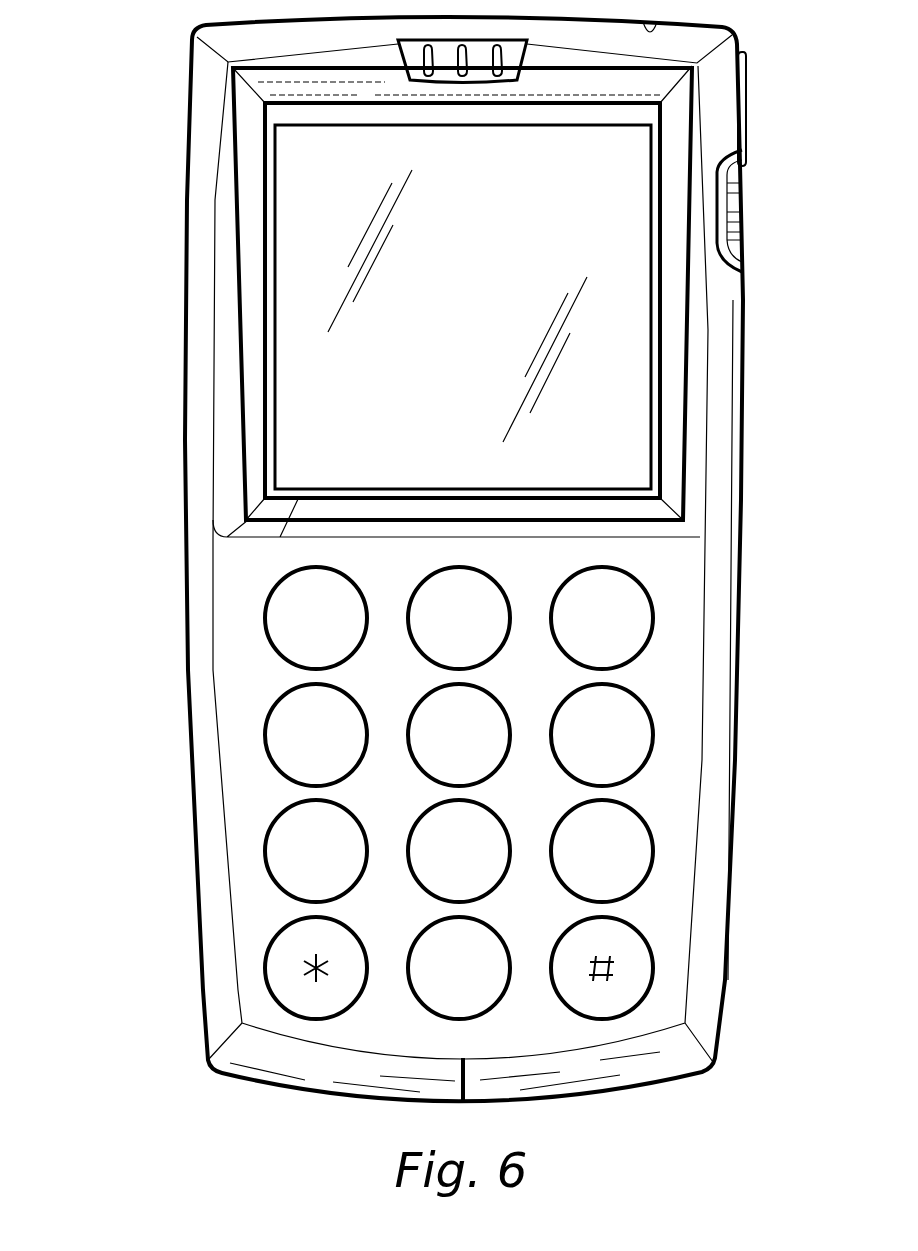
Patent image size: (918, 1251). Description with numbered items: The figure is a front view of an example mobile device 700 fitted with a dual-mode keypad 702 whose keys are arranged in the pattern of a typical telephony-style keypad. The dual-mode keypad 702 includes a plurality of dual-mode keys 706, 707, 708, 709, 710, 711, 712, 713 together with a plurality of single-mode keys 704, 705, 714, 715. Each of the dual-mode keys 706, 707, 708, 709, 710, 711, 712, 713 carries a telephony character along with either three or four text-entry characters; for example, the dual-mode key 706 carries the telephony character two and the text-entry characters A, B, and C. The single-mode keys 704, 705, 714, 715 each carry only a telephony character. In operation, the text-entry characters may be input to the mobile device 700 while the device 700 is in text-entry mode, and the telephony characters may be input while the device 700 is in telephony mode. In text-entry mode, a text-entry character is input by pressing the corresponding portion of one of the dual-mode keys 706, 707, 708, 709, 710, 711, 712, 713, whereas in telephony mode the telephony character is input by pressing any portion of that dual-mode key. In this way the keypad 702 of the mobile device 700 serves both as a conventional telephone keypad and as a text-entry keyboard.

The mobile device 700 is at (110, 150).
The dual-mode keypad 702 is at (245, 572).
The single-mode key 704 is at (266, 627).
The single-mode key 705 is at (411, 951).
The dual-mode key 706 is at (411, 604).
The dual-mode key 707 is at (652, 626).
The dual-mode key 708 is at (266, 742).
The dual-mode key 709 is at (411, 720).
The dual-mode key 710 is at (652, 742).
The dual-mode key 711 is at (411, 835).
The dual-mode key 712 is at (266, 858).
The dual-mode key 713 is at (652, 858).
The single-mode key 714 is at (266, 975).
The single-mode key 715 is at (652, 975).